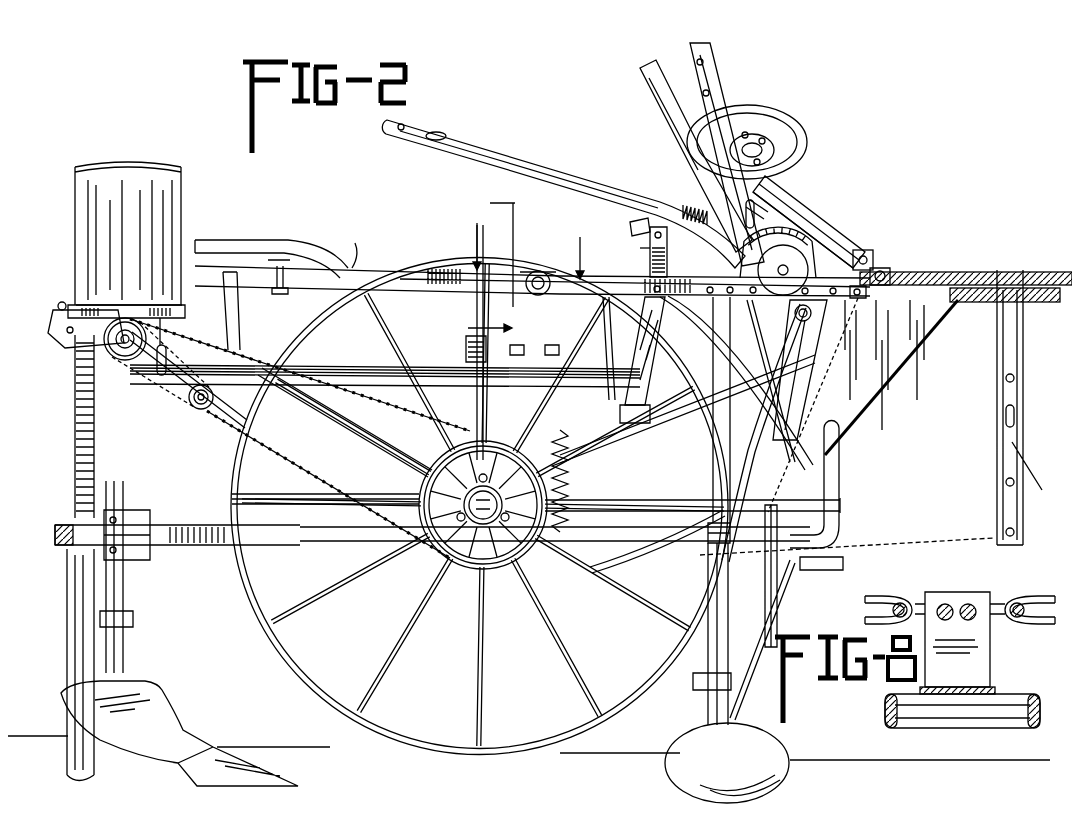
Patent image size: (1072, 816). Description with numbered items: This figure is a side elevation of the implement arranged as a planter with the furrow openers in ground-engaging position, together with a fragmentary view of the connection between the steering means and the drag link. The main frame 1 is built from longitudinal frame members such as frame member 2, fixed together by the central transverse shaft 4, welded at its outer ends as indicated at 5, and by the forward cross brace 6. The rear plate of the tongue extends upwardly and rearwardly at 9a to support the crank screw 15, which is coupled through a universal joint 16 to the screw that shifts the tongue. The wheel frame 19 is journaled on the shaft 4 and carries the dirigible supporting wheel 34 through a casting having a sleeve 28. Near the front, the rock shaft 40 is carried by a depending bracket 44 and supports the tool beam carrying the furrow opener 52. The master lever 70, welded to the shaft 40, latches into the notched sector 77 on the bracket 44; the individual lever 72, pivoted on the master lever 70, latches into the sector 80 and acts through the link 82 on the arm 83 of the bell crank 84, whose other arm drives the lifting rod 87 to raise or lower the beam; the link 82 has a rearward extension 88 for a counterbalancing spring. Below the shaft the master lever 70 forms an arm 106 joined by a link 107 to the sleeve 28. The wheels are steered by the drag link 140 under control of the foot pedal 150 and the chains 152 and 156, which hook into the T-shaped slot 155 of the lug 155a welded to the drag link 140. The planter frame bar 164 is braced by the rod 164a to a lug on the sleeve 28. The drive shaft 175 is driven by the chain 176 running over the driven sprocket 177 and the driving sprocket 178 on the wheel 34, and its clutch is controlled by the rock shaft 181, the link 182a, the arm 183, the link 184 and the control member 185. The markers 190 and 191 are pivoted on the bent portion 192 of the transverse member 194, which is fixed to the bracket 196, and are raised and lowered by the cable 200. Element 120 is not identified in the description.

In FIG. 2, the main frame 1 is at (357, 244).
In FIG. 2, the frame member 2 is at (427, 280).
In FIG. 2, the transverse shaft 4 is at (537, 272).
In FIG. 2, the weld 5 is at (519, 251).
In FIG. 2, the cross brace 6 is at (491, 268).
In FIG. 2, the upwardly and rearwardly extending portion of upper plate 9a is at (853, 252).
In FIG. 2, the crank screw 15 is at (773, 215).
In FIG. 2, the universal joint 16 is at (878, 268).
In FIG. 2, the wheel frame 19 is at (464, 349).
In FIG. 2, the sleeve 28 is at (480, 412).
In FIG. 2, the supporting wheel 34 is at (282, 652).
In FIG. 2, the rock shaft 40 is at (796, 322).
In FIG. 2, the bracket 44 is at (768, 310).
In FIG. 2, the furrow opener 52 is at (173, 737).
In FIG. 2, the master lever 70 is at (537, 180).
In FIG. 2, the lever 72 is at (714, 102).
In FIG. 2, the notched sector 77 is at (822, 232).
In FIG. 2, the notched sector 80 is at (795, 214).
In FIG. 2, the link 82 is at (700, 252).
In FIG. 2, the arm of bell crank 83 is at (650, 247).
In FIG. 2, the bell crank 84 is at (650, 267).
In FIG. 2, the lifting rod 87 is at (580, 378).
In FIG. 2, the rearward extension 88 is at (632, 232).
In FIG. 2, the arm 106 is at (850, 348).
In FIG. 2, the link 107 is at (620, 418).
In FIG. 2, the lever 120 is at (657, 90).
In FIG. 8, the drag link 140 is at (1005, 713).
In FIG. 2, the foot pedal 150 is at (656, 305).
In FIG. 8, the chain 152 is at (1032, 600).
In FIG. 8, the T-shaped slot 155 is at (968, 602).
In FIG. 8, the lug 155a is at (968, 668).
In FIG. 8, the chain 156 is at (883, 602).
In FIG. 2, the frame bar 164 is at (343, 372).
In FIG. 2, the brace rod 164a is at (308, 403).
In FIG. 2, the drive shaft 175 is at (125, 360).
In FIG. 2, the chain 176 is at (217, 420).
In FIG. 2, the driven sprocket 177 is at (107, 337).
In FIG. 2, the driving sprocket 178 is at (485, 547).
In FIG. 2, the rock shaft 181 is at (160, 383).
In FIG. 2, the link 182a is at (227, 322).
In FIG. 2, the arm 183 is at (178, 338).
In FIG. 2, the link 184 is at (173, 310).
In FIG. 2, the control member 185 is at (140, 313).
In FIG. 2, the marker 190 is at (737, 717).
In FIG. 2, the marker 191 is at (788, 128).
In FIG. 2, the rearwardly bent portion 192 is at (790, 575).
In FIG. 2, the transverse member 194 is at (837, 480).
In FIG. 2, the bracket 196 is at (870, 397).
In FIG. 2, the cable 200 is at (807, 483).